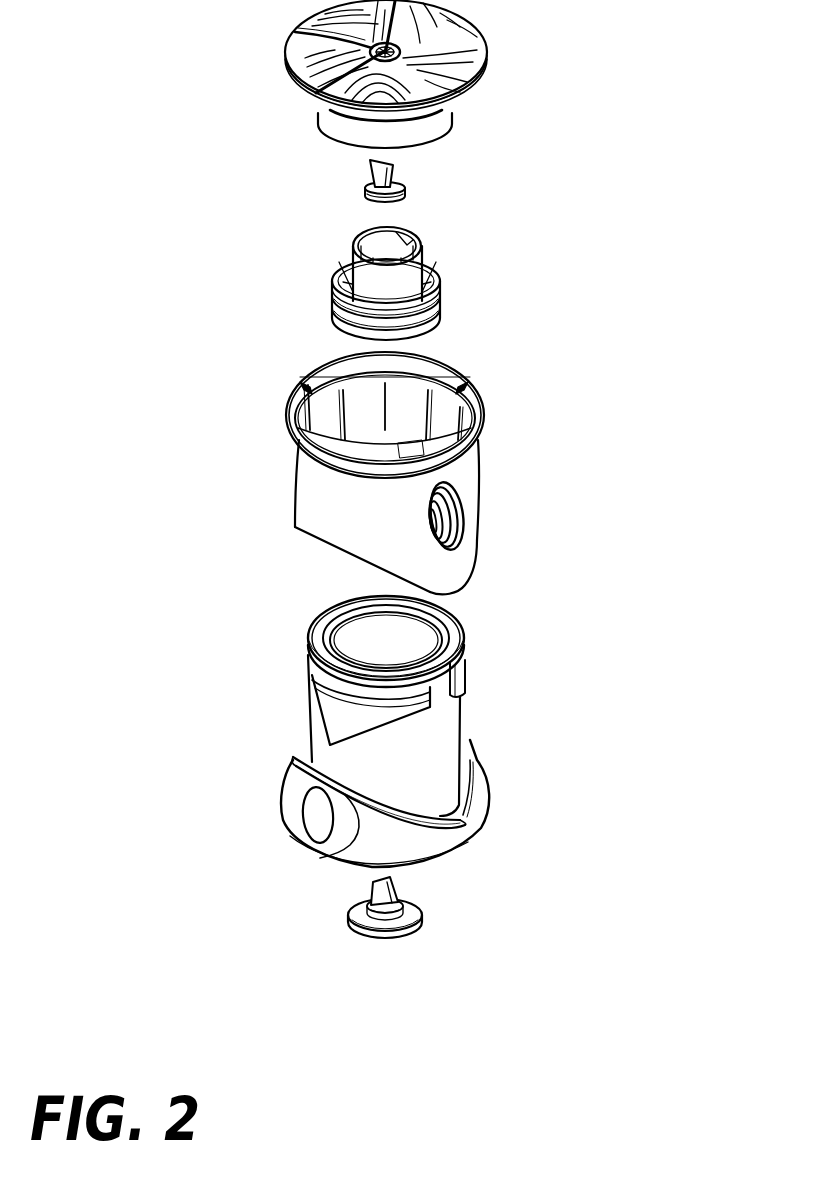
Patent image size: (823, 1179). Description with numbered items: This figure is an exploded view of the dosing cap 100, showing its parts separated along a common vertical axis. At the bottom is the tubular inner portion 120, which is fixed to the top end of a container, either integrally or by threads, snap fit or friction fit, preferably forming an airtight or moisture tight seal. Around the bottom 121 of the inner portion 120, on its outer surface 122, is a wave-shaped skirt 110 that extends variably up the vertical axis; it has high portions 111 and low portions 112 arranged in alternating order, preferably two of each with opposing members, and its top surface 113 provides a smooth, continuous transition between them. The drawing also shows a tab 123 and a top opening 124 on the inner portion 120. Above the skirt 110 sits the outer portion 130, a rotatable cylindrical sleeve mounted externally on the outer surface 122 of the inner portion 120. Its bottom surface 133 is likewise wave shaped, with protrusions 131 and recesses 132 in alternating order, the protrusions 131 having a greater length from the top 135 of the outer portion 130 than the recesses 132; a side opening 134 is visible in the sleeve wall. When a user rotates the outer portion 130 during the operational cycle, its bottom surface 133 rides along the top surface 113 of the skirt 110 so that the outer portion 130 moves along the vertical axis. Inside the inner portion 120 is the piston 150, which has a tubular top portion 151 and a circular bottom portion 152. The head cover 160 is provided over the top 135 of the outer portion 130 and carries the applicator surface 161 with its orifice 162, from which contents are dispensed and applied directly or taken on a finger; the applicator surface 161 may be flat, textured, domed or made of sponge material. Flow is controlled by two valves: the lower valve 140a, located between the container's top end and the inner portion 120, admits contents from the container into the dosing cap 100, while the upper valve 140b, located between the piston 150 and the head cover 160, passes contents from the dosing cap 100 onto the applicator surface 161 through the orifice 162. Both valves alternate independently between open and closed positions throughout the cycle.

The dosing cap 100 is at (661, 483).
The skirt 110 is at (278, 833).
The high portions 111 is at (300, 755).
The low portions 112 is at (466, 826).
The top surface 113 is at (320, 858).
The inner portion 120 is at (291, 705).
The bottom 121 is at (465, 823).
The outer surface 122 is at (453, 738).
The tab 123 is at (465, 638).
The opening of housing 124 is at (330, 640).
The outer portion 130 is at (288, 472).
The protrusions 131 is at (462, 590).
The recesses 132 is at (365, 576).
The bottom surface 133 is at (318, 547).
The vent opening 134 is at (461, 500).
The top 135 is at (300, 377).
The lower valve 140a is at (432, 913).
The upper valve 140b is at (415, 187).
The piston 150 is at (445, 257).
The tubular top portion 151 is at (363, 272).
The circular bottom portion 152 is at (437, 323).
The head cover 160 is at (300, 100).
The applicator surface 161 is at (307, 53).
The orifice 162 is at (403, 46).